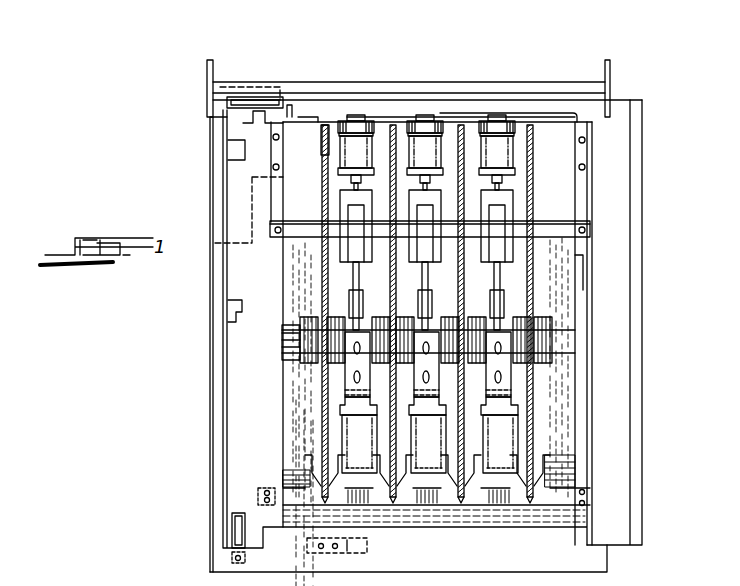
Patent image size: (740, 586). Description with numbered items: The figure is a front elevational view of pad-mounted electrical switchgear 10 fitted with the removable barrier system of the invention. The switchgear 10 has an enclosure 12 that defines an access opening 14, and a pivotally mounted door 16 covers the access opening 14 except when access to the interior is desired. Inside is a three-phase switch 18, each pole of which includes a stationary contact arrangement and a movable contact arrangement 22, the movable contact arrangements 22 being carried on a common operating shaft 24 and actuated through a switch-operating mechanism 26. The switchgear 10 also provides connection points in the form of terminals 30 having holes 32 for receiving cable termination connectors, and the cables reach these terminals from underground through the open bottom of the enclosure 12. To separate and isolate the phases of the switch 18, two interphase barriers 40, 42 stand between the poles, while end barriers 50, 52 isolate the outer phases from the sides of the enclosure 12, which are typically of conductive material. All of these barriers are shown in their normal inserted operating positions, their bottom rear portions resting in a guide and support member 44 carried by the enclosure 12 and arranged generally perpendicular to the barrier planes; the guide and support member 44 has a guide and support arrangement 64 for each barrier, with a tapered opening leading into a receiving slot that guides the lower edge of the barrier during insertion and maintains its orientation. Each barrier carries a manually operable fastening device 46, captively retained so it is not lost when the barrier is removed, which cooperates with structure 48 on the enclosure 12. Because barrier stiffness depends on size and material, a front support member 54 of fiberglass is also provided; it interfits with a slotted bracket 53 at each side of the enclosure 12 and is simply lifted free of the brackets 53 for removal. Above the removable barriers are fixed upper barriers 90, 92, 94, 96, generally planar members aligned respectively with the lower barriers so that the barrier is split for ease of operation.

The electrical switchgear 10 is at (152, 163).
The enclosure 12 is at (208, 372).
The access opening 14 is at (252, 265).
The door 16 is at (644, 278).
The three-phase switch 18 is at (514, 285).
The movable contact arrangement 22 is at (513, 363).
The common operating shaft 24 is at (276, 348).
The switch-operating mechanism 26 is at (262, 172).
The terminals 30 is at (348, 401).
The holes 32 is at (321, 359).
The interphase barrier 40 is at (392, 422).
The interphase barrier 42 is at (463, 305).
The guide and support member 44 is at (554, 460).
The fastening device 46 is at (398, 275).
The cooperating structure 48 is at (391, 284).
The end barrier 50 is at (322, 277).
The end barrier 52 is at (527, 396).
The slotted bracket 53 is at (257, 497).
The front support member 54 is at (565, 496).
The guide and support arrangement 64 is at (537, 452).
The fixed upper barrier 90 is at (327, 152).
The fixed upper barrier 92 is at (421, 128).
The fixed upper barrier 94 is at (464, 160).
The fixed upper barrier 96 is at (533, 160).